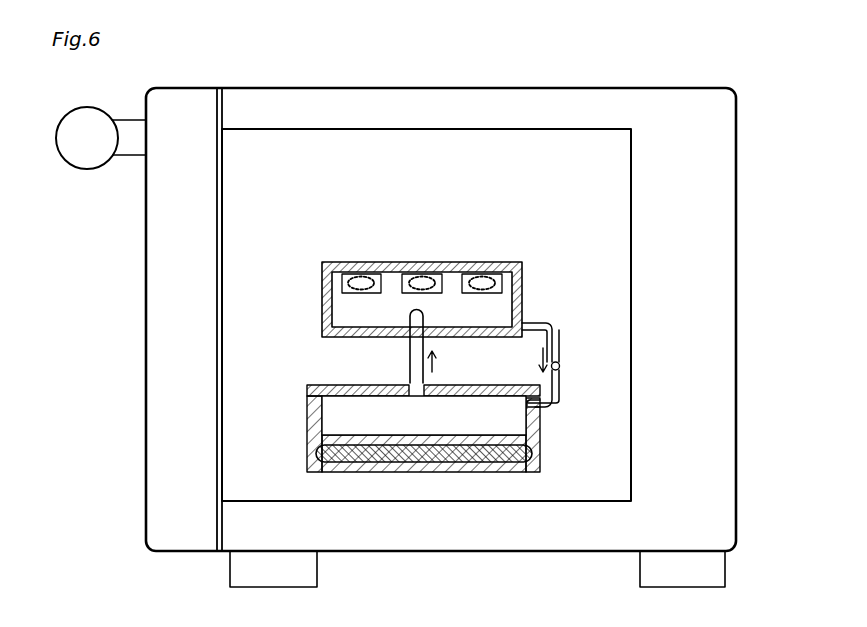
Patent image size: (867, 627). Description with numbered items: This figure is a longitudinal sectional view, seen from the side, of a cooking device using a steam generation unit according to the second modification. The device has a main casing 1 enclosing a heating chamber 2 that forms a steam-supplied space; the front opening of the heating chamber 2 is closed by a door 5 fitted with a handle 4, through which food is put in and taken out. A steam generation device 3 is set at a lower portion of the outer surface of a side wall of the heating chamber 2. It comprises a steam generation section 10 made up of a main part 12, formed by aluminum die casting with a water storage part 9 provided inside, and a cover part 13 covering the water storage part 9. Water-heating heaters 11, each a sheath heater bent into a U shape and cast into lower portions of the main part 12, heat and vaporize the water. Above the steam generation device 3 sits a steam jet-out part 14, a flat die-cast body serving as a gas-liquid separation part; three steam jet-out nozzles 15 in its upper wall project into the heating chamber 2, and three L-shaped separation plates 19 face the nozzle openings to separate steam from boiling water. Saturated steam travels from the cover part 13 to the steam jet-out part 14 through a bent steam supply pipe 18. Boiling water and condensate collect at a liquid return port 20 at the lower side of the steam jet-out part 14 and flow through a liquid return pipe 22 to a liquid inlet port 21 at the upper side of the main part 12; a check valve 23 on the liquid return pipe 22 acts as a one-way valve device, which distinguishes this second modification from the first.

The main casing 1 is at (737, 127).
The heating chamber 2 is at (632, 170).
The steam generation device 3 is at (548, 373).
The handle 4 is at (58, 134).
The door 5 is at (146, 360).
The water storage part 9 is at (322, 420).
The steam generation section 10 is at (545, 466).
The water-heating heater 11 is at (380, 455).
The main part 12 is at (541, 430).
The cover part 13 is at (493, 383).
The steam jet-out part 14 is at (523, 278).
The steam jet-out nozzle 15 is at (351, 292).
The steam supply pipe 18 is at (425, 340).
The separation plate 19 is at (382, 286).
The liquid return port 20 is at (527, 333).
The liquid inlet port 21 is at (530, 402).
The liquid return pipe 22 is at (561, 330).
The check valve 23 is at (562, 366).